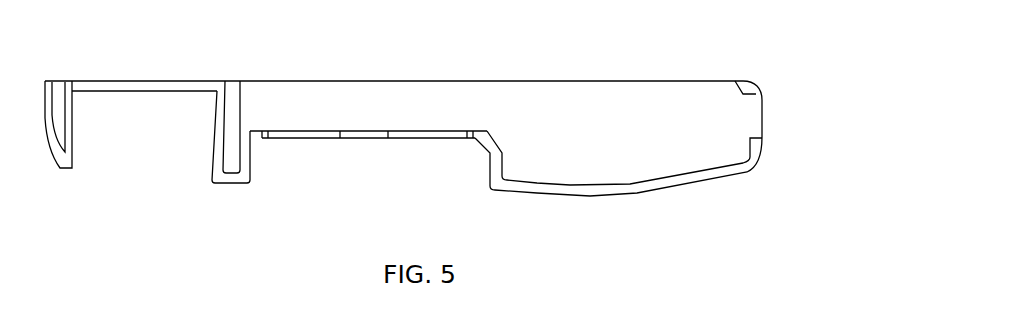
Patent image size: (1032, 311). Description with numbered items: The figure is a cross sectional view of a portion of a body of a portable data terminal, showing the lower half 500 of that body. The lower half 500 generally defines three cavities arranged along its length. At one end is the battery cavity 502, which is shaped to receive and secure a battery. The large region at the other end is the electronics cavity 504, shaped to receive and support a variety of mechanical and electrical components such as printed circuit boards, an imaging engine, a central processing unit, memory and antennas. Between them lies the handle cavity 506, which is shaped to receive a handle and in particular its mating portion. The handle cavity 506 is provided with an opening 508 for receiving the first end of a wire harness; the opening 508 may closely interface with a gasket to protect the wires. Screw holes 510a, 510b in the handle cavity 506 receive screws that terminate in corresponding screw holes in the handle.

The lower half 500 is at (660, 49).
The battery cavity 502 is at (152, 155).
The electronics cavity 504 is at (638, 137).
The handle cavity 506 is at (383, 198).
The opening 508 is at (367, 131).
The screw hole 510a is at (265, 131).
The screw hole 510b is at (473, 131).